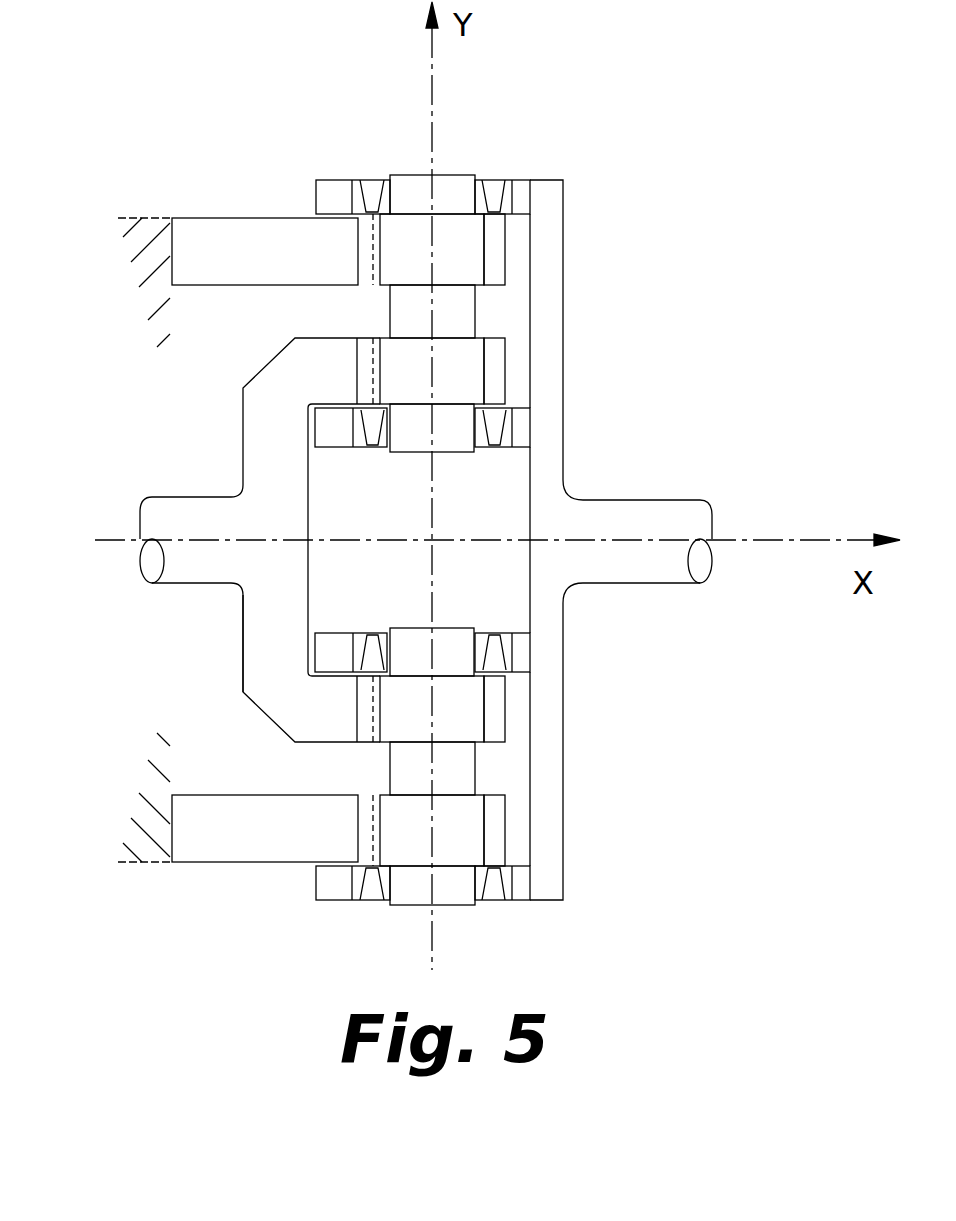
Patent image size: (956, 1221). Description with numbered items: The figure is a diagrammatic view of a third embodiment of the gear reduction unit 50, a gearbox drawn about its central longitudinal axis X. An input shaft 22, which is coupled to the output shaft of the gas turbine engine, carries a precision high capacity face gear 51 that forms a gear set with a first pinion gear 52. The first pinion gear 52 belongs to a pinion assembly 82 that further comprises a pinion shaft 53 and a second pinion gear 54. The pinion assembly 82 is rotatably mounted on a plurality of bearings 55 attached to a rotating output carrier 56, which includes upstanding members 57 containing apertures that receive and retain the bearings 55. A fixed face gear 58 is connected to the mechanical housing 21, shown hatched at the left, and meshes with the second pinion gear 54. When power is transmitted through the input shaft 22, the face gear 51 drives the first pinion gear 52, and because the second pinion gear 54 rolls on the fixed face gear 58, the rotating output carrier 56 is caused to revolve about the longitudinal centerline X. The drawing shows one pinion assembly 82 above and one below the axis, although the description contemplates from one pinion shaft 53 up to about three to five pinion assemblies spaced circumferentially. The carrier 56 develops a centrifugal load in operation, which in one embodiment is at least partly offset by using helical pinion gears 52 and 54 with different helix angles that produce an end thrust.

The mechanical housing 21 is at (147, 297).
The input shaft 22 is at (188, 507).
The gear reduction unit 50 is at (612, 299).
The face gear 51 is at (263, 600).
The first pinion gear 52 is at (455, 378).
The pinion shaft 53 is at (415, 307).
The second pinion gear 54 is at (418, 260).
The bearings 55 is at (370, 183).
The rotating output carrier 56 is at (564, 185).
The upstanding members 57 is at (322, 195).
The fixed face gear 58 is at (247, 233).
The pinion assembly 82 is at (489, 316).